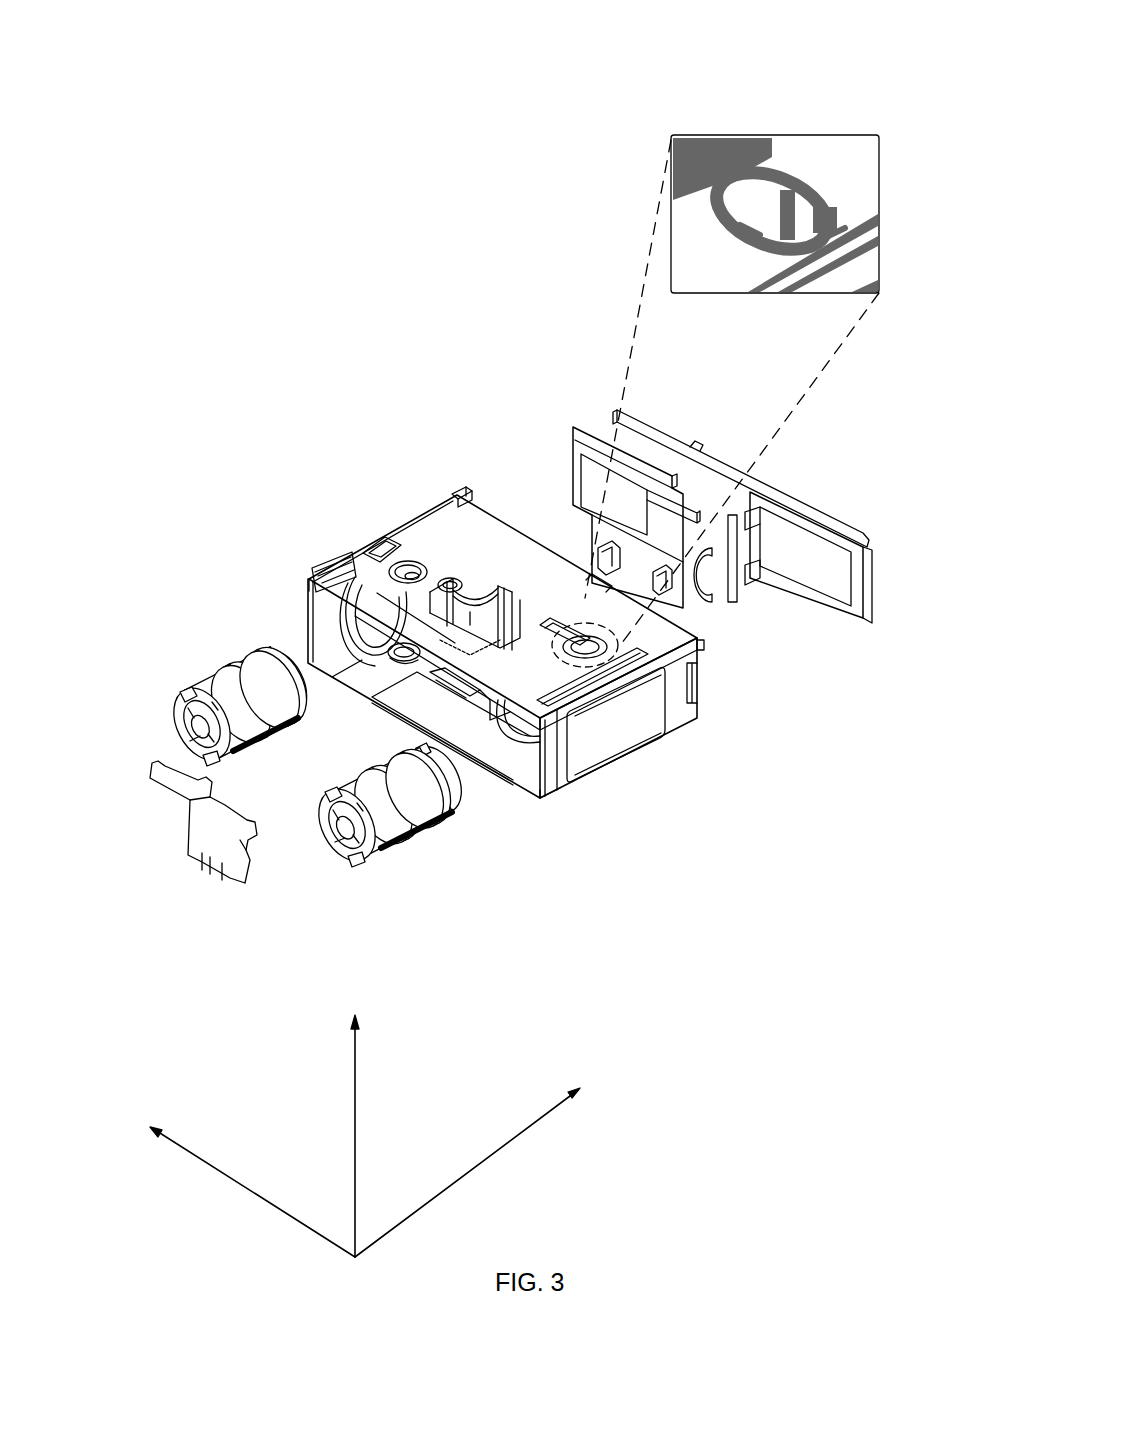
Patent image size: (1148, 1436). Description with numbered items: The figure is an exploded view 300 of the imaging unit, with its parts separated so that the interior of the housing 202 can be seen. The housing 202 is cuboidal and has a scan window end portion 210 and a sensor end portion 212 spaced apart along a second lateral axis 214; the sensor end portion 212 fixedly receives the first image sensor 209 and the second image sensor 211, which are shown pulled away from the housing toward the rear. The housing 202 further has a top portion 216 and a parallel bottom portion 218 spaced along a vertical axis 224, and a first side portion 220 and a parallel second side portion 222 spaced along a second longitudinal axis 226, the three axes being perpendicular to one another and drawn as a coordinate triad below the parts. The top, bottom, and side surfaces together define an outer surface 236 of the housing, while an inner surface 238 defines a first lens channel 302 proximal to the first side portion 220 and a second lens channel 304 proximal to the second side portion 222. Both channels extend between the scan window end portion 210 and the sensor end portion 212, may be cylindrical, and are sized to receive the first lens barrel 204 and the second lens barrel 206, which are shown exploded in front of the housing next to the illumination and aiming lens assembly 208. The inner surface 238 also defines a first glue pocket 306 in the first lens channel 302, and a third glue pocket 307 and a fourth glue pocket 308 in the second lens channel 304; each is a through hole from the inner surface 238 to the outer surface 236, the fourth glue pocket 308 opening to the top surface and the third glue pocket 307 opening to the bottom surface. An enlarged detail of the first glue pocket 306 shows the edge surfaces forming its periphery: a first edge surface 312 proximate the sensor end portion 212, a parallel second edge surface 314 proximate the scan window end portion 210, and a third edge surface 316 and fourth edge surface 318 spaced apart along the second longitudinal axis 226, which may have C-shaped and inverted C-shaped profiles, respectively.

The exploded view 300 is at (352, 210).
The housing 202 is at (690, 717).
The first lens barrel 204 is at (423, 832).
The second lens barrel 206 is at (245, 672).
The illumination and aiming lens assembly 208 is at (150, 773).
The first image sensor 209 is at (803, 558).
The scan window end portion 210 is at (335, 642).
The second image sensor 211 is at (605, 475).
The sensor end portion 212 is at (475, 530).
The second lateral axis 214 is at (457, 1177).
The top portion 216 is at (352, 567).
The bottom portion 218 is at (548, 805).
The first side portion 220 is at (633, 725).
The second side portion 222 is at (321, 552).
The vertical axis 224 is at (353, 1127).
The second longitudinal axis 226 is at (270, 1205).
The outer surface 236 is at (494, 585).
The inner surface 238 is at (403, 704).
The first lens channel 302 is at (520, 740).
The second lens channel 304 is at (378, 641).
The first glue pocket 306 is at (580, 637).
The third glue pocket 307 is at (401, 652).
The fourth glue pocket 308 is at (405, 570).
The first edge surface 312 is at (812, 200).
The second edge surface 314 is at (748, 228).
The third edge surface 316 is at (834, 240).
The fourth edge surface 318 is at (737, 182).